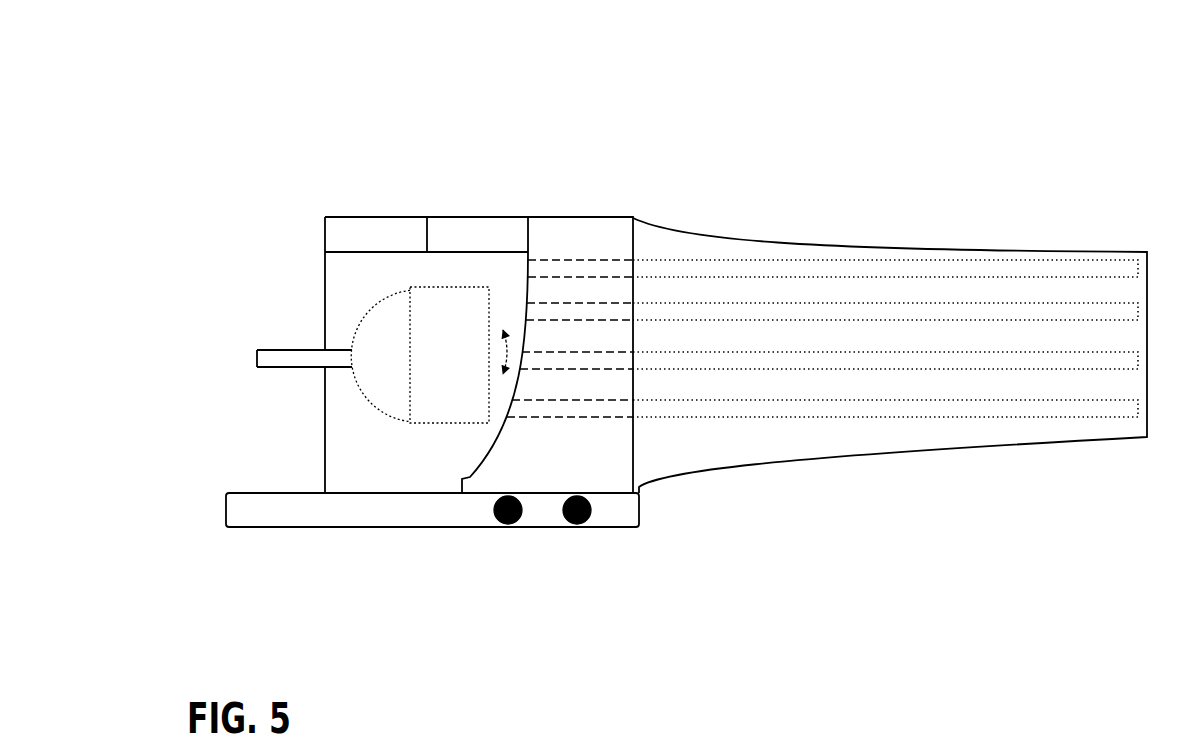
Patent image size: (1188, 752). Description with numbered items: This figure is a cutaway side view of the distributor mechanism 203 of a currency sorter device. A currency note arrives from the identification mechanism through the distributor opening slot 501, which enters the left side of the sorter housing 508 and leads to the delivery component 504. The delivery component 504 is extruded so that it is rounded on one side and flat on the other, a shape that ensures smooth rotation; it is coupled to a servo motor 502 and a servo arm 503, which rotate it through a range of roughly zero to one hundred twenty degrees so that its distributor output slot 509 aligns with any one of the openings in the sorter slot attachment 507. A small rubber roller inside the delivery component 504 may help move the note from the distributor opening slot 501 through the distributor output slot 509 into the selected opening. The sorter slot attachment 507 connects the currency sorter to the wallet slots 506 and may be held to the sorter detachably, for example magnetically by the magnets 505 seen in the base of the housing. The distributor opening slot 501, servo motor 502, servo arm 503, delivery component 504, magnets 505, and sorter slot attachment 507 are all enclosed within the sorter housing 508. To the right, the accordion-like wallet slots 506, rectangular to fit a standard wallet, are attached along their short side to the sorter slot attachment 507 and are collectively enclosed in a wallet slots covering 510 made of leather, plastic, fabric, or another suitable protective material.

The distributor mechanism 203 is at (957, 66).
The distributor opening slot 501 is at (269, 350).
The servo motor 502 is at (338, 227).
The servo arm 503 is at (498, 231).
The delivery component 504 is at (392, 287).
The magnets 505 is at (523, 523).
The wallet slots 506 is at (731, 410).
The sorter slot attachment 507 is at (599, 233).
The sorter housing 508 is at (367, 479).
The distributor output slot 509 is at (468, 352).
The wallet slots covering 510 is at (914, 236).